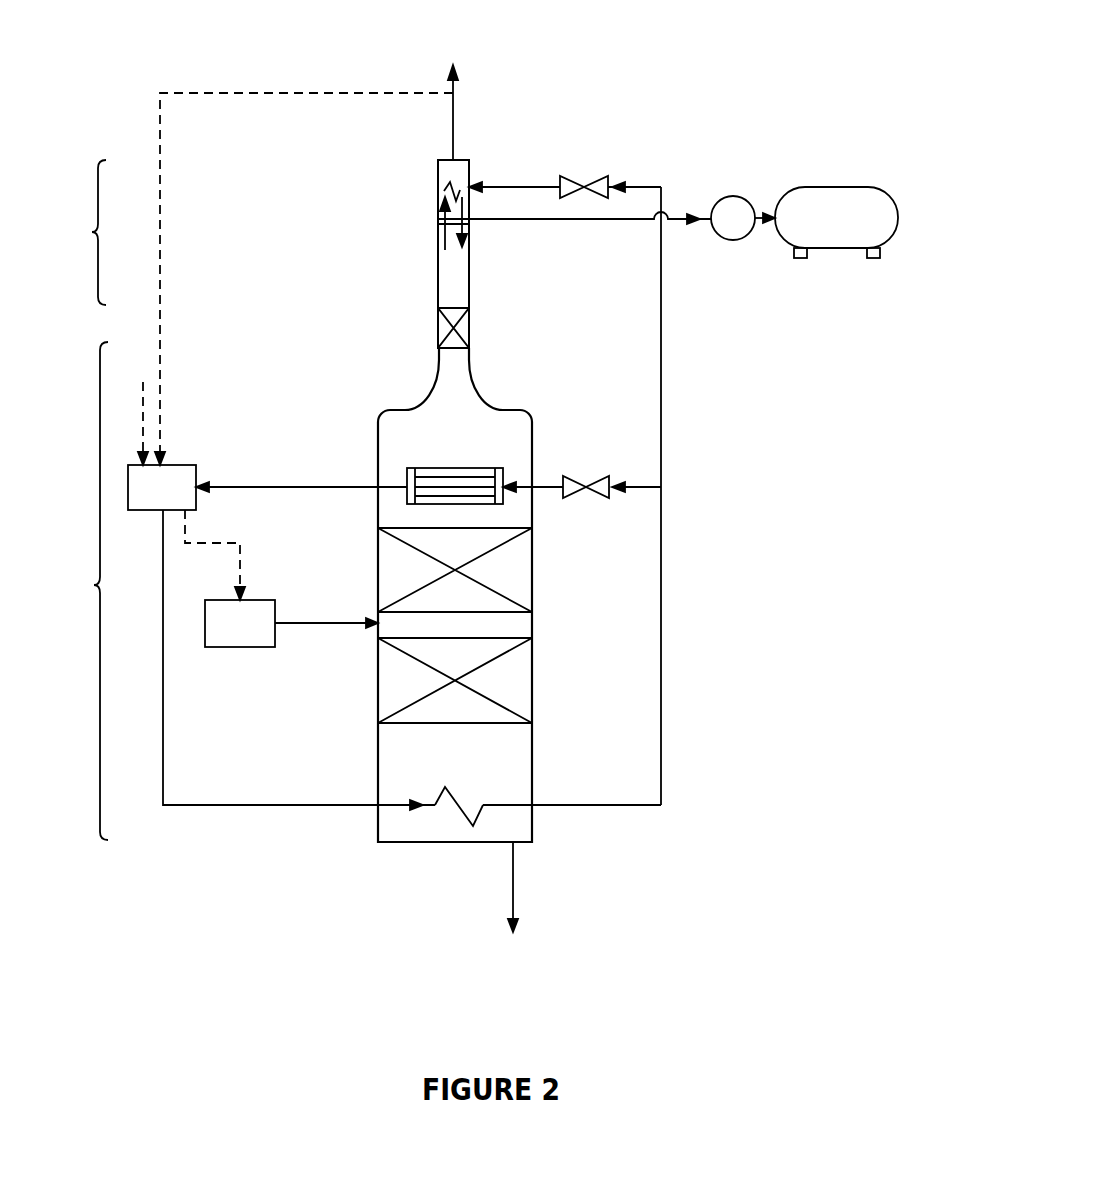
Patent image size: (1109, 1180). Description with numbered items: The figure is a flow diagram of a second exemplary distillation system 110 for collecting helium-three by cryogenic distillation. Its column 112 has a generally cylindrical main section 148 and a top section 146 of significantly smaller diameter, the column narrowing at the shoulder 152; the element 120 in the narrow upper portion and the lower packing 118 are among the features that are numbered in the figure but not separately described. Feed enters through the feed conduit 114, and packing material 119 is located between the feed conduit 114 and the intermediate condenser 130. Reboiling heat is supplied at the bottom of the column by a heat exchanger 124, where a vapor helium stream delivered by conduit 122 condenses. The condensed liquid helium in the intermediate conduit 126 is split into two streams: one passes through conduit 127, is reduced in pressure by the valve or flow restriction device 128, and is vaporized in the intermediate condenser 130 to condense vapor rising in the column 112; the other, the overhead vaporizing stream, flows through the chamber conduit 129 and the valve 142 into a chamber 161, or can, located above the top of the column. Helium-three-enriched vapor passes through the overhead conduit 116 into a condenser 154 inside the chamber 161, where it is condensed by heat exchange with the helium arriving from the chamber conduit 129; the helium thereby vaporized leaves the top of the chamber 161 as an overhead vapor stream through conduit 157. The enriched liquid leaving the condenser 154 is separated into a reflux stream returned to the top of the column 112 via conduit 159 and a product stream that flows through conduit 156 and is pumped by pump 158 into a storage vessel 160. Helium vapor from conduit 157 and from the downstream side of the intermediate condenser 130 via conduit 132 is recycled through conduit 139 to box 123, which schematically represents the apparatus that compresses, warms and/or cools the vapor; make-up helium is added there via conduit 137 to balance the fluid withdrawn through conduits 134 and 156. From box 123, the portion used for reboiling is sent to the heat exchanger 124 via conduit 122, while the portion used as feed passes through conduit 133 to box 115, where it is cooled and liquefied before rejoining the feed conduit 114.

The distillation system 110 is at (732, 112).
The column 112 is at (412, 427).
The feed conduit 114 is at (332, 620).
The box 115 is at (245, 635).
The overhead conduit 116 is at (438, 226).
The lower packing bed 118 is at (522, 683).
The packing material 119 is at (522, 570).
The demister 120 is at (466, 332).
The conduit 122 is at (320, 803).
The box 123 is at (182, 468).
The heat exchanger 124 is at (463, 813).
The intermediate conduit 126 is at (585, 803).
The conduit 127 is at (640, 490).
The valve or flow restriction device 128 is at (575, 479).
The chamber conduit 129 is at (637, 185).
The intermediate condenser 130 is at (430, 467).
The conduit 132 is at (318, 488).
The conduit 133 is at (220, 547).
The conduit 134 is at (513, 855).
The conduit 137 is at (140, 417).
The conduit 139 is at (160, 228).
The valve 142 is at (568, 175).
The top section 146 is at (76, 232).
The main section 148 is at (77, 591).
The shoulder 152 is at (490, 396).
The condenser 154 is at (444, 190).
The conduit 156 is at (592, 223).
The conduit 157 is at (455, 137).
The pump 158 is at (741, 210).
The conduit 159 is at (469, 223).
The storage vessel 160 is at (838, 200).
The chamber 161 is at (452, 170).